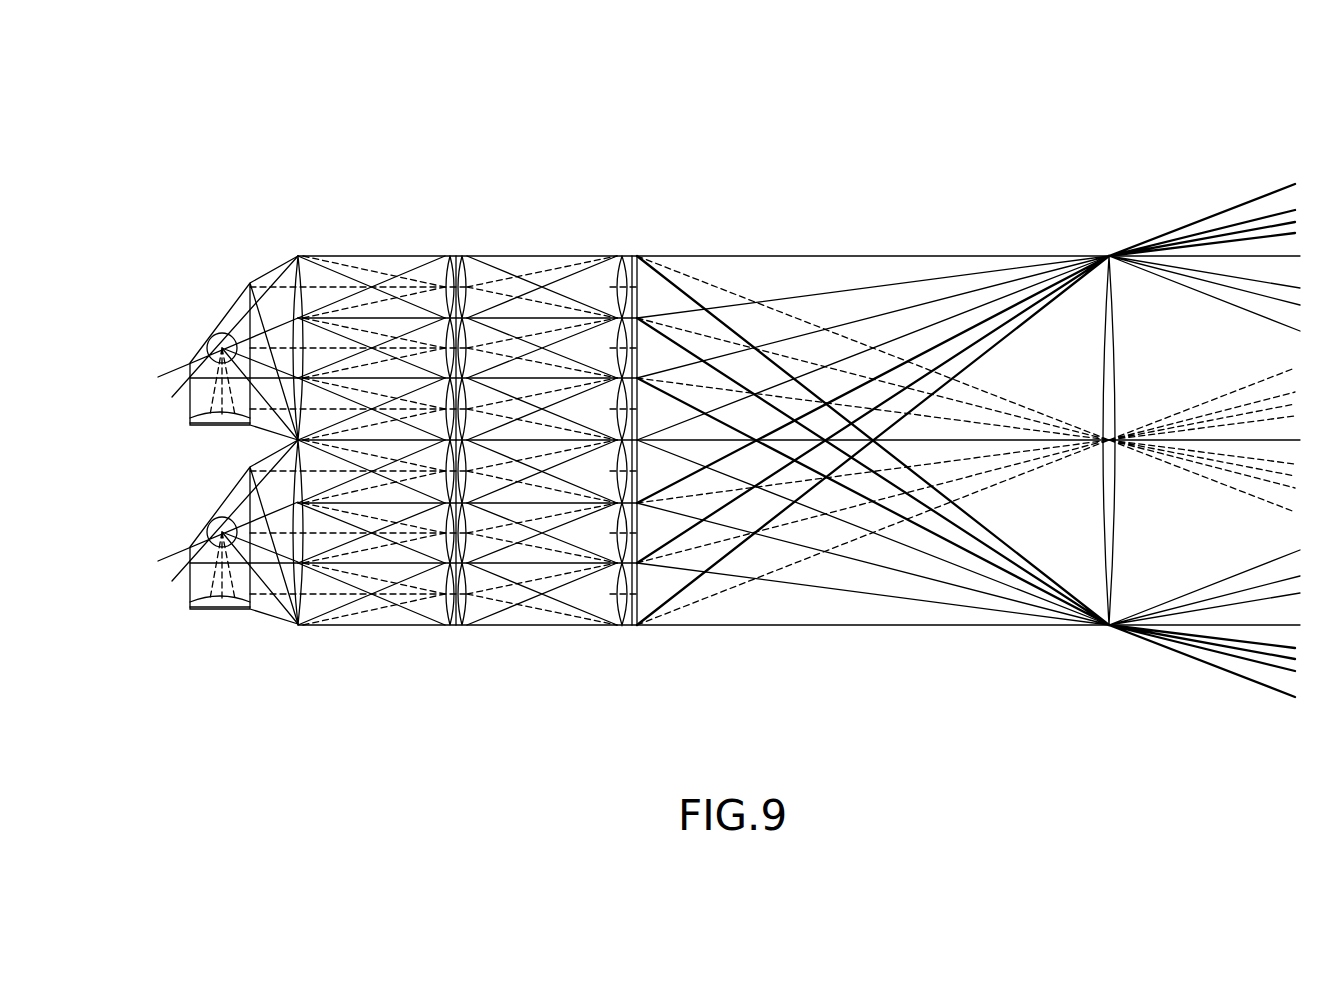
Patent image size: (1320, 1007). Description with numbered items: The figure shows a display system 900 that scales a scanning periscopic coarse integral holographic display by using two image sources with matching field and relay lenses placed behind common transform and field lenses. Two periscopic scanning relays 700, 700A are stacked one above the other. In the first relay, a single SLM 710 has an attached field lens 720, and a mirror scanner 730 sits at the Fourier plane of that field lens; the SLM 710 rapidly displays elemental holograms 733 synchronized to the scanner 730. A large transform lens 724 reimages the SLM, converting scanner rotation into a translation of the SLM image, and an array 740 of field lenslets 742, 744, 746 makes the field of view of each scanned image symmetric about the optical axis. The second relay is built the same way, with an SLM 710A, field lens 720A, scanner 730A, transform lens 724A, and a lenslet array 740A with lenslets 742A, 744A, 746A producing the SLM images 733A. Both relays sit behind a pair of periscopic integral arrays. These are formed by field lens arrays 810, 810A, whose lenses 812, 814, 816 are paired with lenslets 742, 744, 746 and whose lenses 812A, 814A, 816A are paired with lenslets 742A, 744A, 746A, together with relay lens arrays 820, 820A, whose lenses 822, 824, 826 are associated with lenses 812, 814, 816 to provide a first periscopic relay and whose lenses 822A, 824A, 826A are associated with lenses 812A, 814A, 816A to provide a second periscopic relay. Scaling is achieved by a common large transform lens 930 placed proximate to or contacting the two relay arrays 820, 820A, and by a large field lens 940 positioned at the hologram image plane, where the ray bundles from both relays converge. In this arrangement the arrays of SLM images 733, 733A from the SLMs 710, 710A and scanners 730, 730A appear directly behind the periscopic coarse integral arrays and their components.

The display system 900 is at (185, 120).
The periscopic scanning relay 700A is at (460, 170).
The periscopic scanning relay 700 is at (460, 708).
The SLM 710A is at (240, 436).
The SLM 710 is at (222, 645).
The field lens 720A is at (170, 423).
The field lens 720 is at (170, 426).
The mirror scanner 730A is at (185, 332).
The mirror scanner 730 is at (188, 532).
The large transform lens 724A is at (297, 250).
The large transform lens 724 is at (297, 632).
The field lenslet array 740A is at (455, 250).
The field lenslet array 740 is at (452, 632).
The SLM images 733A is at (362, 264).
The elemental holograms 733 is at (362, 456).
The field lenslet 742A is at (437, 300).
The field lenslet 742 is at (437, 490).
The field lenslet 744A is at (437, 350).
The field lenslet 744 is at (437, 538).
The field lenslet 746A is at (437, 410).
The field lenslet 746 is at (437, 600).
The field lens array 810A is at (472, 252).
The field lens array 810 is at (466, 633).
The field lens 812A is at (482, 268).
The field lens 812 is at (482, 455).
The field lens 814A is at (482, 330).
The field lens 814 is at (482, 520).
The field lens 816A is at (482, 392).
The field lens 816 is at (482, 580).
The relay lens 822A is at (605, 296).
The relay lens 822 is at (605, 490).
The relay lens 824A is at (605, 358).
The relay lens 824 is at (605, 552).
The relay lens 826A is at (605, 420).
The relay lens 826 is at (605, 612).
The relay lens array 820A is at (622, 250).
The relay lens array 820 is at (622, 632).
The common large transform lens 930 is at (642, 251).
The large field lens 940 is at (1117, 214).